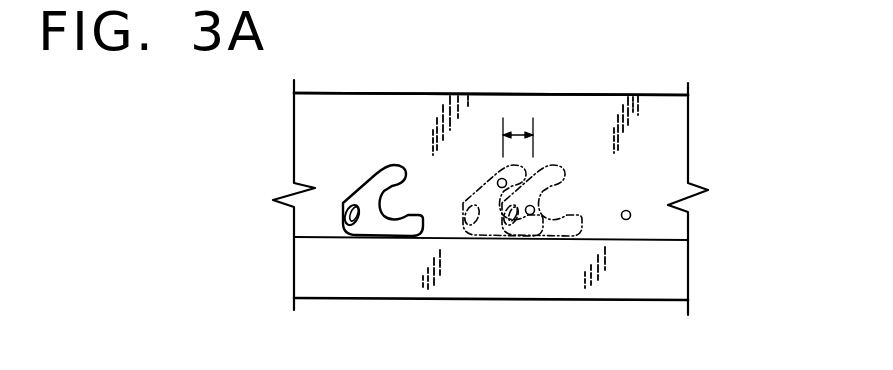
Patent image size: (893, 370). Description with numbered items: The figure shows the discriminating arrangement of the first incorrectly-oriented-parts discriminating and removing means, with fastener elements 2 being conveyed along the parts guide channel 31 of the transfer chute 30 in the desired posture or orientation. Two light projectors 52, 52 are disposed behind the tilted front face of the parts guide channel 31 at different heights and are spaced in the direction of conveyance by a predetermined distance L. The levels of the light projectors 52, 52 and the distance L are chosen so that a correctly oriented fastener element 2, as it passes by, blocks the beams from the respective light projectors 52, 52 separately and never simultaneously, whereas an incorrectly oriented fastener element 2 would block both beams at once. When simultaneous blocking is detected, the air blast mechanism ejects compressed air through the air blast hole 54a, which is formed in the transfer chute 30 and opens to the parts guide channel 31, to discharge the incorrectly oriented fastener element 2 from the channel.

The fastener element 2 is at (380, 177).
The transfer chute 30 is at (345, 303).
The parts guide channel 31 is at (668, 133).
The light projector 52 is at (501, 188).
The air blast hole 54a is at (631, 216).
The predetermined distance L is at (520, 133).